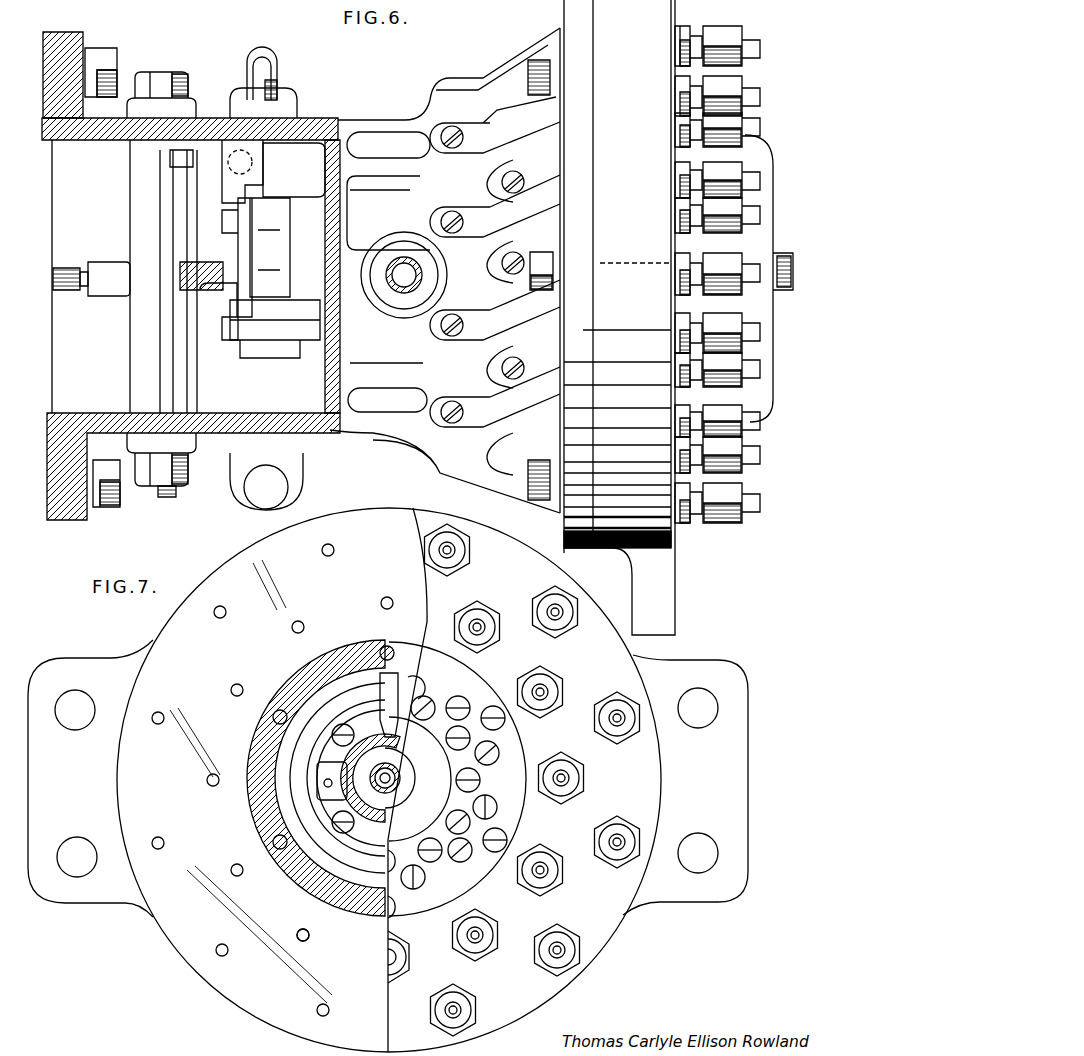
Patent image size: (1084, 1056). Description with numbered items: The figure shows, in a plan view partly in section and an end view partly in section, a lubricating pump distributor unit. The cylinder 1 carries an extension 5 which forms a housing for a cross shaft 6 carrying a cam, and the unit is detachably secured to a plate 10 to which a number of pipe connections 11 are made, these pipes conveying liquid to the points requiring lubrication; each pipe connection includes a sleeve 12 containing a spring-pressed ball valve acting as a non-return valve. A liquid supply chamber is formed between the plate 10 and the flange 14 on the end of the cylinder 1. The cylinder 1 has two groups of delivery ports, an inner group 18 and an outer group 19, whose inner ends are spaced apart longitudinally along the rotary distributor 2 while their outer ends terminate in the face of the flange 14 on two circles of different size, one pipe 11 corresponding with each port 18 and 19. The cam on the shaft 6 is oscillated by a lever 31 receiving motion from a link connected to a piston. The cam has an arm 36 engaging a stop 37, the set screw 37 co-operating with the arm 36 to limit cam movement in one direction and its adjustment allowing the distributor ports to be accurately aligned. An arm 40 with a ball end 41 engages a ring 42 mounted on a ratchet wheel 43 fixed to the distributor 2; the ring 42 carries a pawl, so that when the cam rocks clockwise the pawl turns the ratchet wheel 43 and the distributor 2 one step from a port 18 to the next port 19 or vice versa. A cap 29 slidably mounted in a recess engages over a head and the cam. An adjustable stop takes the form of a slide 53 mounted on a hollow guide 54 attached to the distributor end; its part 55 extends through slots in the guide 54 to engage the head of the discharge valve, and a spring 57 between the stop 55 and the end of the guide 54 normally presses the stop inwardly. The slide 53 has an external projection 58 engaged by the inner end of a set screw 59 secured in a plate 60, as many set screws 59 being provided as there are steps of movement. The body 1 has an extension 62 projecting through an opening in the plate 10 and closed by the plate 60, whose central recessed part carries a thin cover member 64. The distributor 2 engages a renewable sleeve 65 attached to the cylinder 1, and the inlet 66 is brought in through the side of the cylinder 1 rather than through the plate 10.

In FIG. 6, the cylinder 1 is at (405, 398).
In FIG. 6, the rotary distributor 2 is at (322, 193).
In FIG. 6, the extension 5 is at (305, 128).
In FIG. 6, the cross shaft 6 is at (170, 490).
In FIG. 6, the plate 10 is at (628, 35).
In FIG. 7, the plate 10 is at (515, 985).
In FIG. 6, the pipe connections 11 is at (748, 100).
In FIG. 7, the pipe connections 11 is at (480, 622).
In FIG. 6, the sleeve 12 is at (680, 120).
In FIG. 6, the flange 14 is at (580, 32).
In FIG. 7, the flange 14 is at (272, 577).
In FIG. 7, the inner group of delivery ports 18 is at (292, 628).
In FIG. 7, the outer group of delivery ports 19 is at (322, 550).
In FIG. 6, the cap 29 is at (222, 298).
In FIG. 6, the lever 31 is at (205, 281).
In FIG. 6, the arm 36 is at (103, 298).
In FIG. 6, the stop 37 is at (66, 292).
In FIG. 6, the arm 40 is at (197, 157).
In FIG. 6, the ball end 41 is at (213, 168).
In FIG. 6, the ring 42 is at (271, 246).
In FIG. 6, the ratchet wheel 43 is at (268, 352).
In FIG. 7, the slide 53 is at (350, 757).
In FIG. 7, the hollow guide 54 is at (363, 792).
In FIG. 7, the part of adjustable stop 55 is at (290, 860).
In FIG. 7, the spring 57 is at (395, 760).
In FIG. 7, the external projection 58 is at (388, 672).
In FIG. 7, the set screw 59 is at (455, 700).
In FIG. 7, the plate 60 is at (508, 760).
In FIG. 7, the extension 62 is at (270, 797).
In FIG. 6, the thin cover member 64 is at (762, 392).
In FIG. 7, the renewable sleeve 65 is at (295, 813).
In FIG. 6, the inlet 66 is at (393, 292).